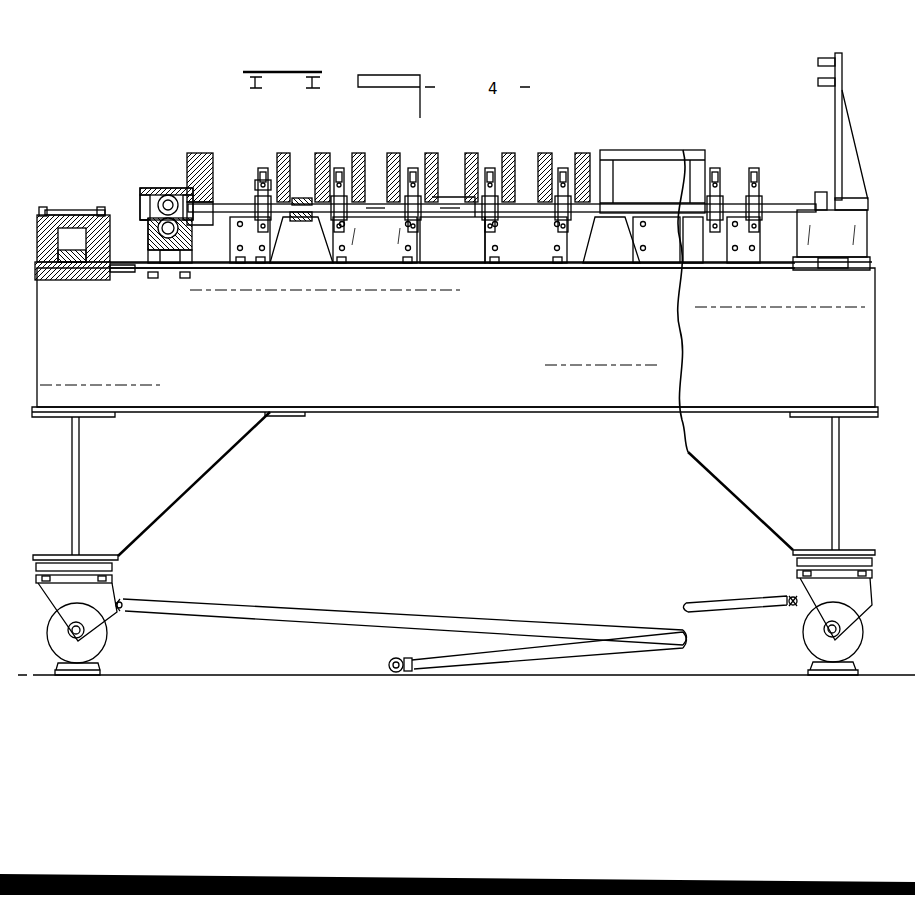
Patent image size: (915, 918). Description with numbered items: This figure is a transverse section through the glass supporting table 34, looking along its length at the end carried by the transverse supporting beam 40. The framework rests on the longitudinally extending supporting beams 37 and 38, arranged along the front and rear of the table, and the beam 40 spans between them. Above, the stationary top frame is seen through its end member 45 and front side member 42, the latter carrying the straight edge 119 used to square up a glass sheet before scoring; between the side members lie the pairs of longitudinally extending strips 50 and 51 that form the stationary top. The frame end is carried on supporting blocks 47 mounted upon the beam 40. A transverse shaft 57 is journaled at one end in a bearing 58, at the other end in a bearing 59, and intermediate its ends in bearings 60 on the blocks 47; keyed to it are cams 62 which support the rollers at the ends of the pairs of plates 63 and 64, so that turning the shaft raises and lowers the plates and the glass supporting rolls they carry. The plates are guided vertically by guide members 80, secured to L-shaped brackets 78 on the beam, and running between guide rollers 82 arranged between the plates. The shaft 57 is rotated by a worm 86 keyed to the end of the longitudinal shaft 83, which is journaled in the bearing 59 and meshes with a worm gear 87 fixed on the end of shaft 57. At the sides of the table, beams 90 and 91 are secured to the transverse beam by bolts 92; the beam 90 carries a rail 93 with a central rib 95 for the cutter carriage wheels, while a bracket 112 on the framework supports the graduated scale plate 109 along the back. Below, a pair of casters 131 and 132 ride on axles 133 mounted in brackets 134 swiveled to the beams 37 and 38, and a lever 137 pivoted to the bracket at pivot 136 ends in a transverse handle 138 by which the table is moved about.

The glass supporting table 34 is at (590, 142).
The longitudinally extending supporting beam 37 is at (72, 455).
The longitudinally extending supporting beam 38 is at (839, 460).
The transverse supporting beam 40 is at (456, 407).
The side member 42 is at (218, 168).
The end member 45 is at (652, 165).
The supporting block 47 is at (308, 240).
The longitudinally extending strip 50 is at (325, 153).
The longitudinally extending strip 51 is at (365, 153).
The shaft 57 is at (464, 222).
The bearing 58 is at (822, 192).
The bearing 59 is at (148, 238).
The bearing 60 is at (300, 198).
The cam 62 is at (242, 228).
The plate 63 is at (395, 205).
The plate 64 is at (442, 205).
The L-shaped bracket 78 is at (382, 263).
The vertical guide member 80 is at (263, 168).
The guide roller 82 is at (256, 182).
The shaft 83 is at (190, 250).
The worm 86 is at (152, 248).
The worm gear 87 is at (170, 188).
The beam 90 is at (37, 238).
The beam 91 is at (858, 234).
The bolt 92 is at (102, 208).
The rail 93 is at (39, 212).
The rib 95 is at (66, 210).
The scale plate 109 is at (818, 62).
The bracket 112 is at (848, 146).
The straight edge 119 is at (214, 150).
The caster 131 is at (48, 630).
The caster 132 is at (862, 625).
The axle 133 is at (824, 630).
The bracket 134 is at (858, 580).
The pivot 136 is at (790, 600).
The lever 137 is at (705, 598).
The transverse handle 138 is at (388, 660).